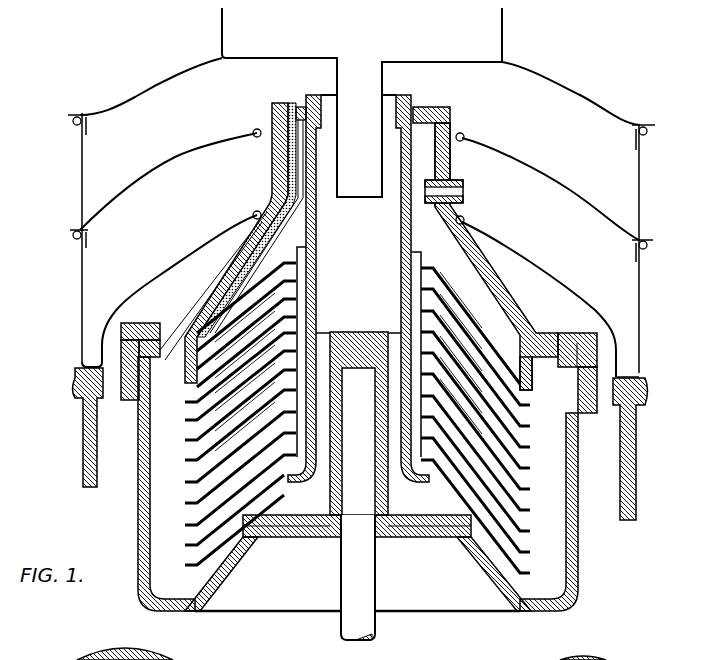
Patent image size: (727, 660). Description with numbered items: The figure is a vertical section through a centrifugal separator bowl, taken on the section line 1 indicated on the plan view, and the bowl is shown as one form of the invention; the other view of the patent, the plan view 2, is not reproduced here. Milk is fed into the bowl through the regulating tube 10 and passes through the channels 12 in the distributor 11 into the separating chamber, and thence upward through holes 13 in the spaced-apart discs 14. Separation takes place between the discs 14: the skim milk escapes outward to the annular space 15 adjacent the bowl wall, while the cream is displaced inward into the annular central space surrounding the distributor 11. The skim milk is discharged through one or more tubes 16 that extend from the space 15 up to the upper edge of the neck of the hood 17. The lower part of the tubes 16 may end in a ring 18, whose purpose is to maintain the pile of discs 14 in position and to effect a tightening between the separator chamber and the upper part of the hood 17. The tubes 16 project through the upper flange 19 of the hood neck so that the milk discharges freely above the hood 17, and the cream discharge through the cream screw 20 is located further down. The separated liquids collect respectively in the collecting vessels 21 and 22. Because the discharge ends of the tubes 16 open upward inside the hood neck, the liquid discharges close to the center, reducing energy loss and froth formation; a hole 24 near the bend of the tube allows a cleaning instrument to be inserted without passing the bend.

The shaft 1 is at (207, 658).
The collar 2 is at (465, 190).
The regulating tube 10 is at (368, 97).
The distributor 11 is at (315, 97).
The channels 12 is at (323, 452).
The holes 13 is at (455, 320).
The spaced-apart discs 14 is at (478, 368).
The annular space 15 is at (160, 508).
The tubes 16 is at (250, 280).
The hood 17 is at (210, 295).
The ring 18 is at (187, 370).
The upper flange 19 is at (302, 106).
The cream screw 20 is at (455, 182).
The collecting vessel 21 is at (105, 160).
The collecting vessel 22 is at (93, 270).
The hole 24 is at (295, 202).